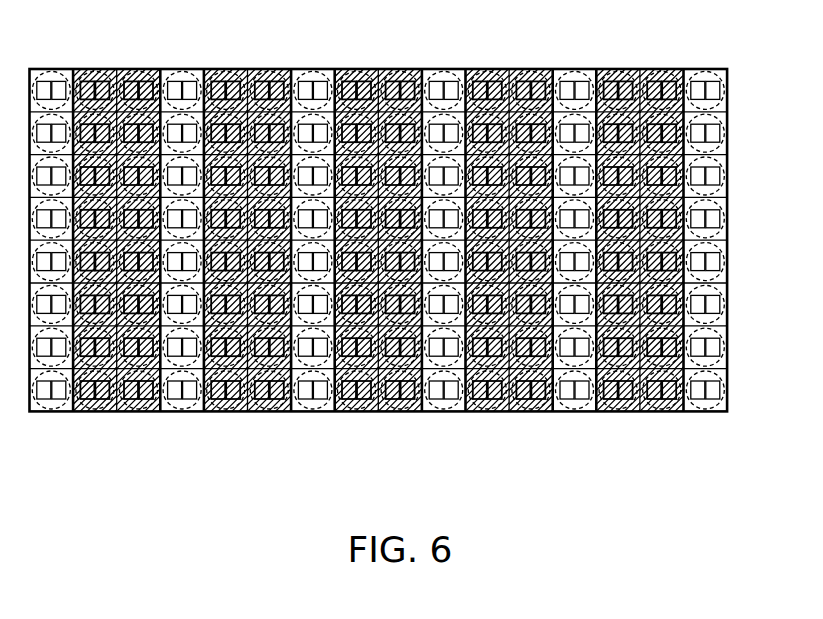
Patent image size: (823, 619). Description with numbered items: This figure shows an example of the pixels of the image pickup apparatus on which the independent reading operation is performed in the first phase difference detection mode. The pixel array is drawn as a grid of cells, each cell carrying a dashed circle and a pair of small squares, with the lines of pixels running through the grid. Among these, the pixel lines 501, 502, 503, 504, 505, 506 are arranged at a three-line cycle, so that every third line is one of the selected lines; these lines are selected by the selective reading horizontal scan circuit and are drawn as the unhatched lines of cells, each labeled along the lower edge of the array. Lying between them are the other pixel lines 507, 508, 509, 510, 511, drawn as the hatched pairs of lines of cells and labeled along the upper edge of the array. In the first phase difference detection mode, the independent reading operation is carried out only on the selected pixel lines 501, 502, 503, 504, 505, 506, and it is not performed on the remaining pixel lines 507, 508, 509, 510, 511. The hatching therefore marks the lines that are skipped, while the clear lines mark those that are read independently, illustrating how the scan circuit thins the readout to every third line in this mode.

The pixel line 501 is at (58, 412).
The pixel line 502 is at (184, 412).
The pixel line 503 is at (311, 412).
The pixel line 504 is at (444, 412).
The pixel line 505 is at (574, 412).
The pixel line 506 is at (706, 412).
The pixel line 507 is at (77, 69).
The pixel line 508 is at (209, 69).
The pixel line 509 is at (340, 69).
The pixel line 510 is at (471, 69).
The pixel line 511 is at (603, 69).